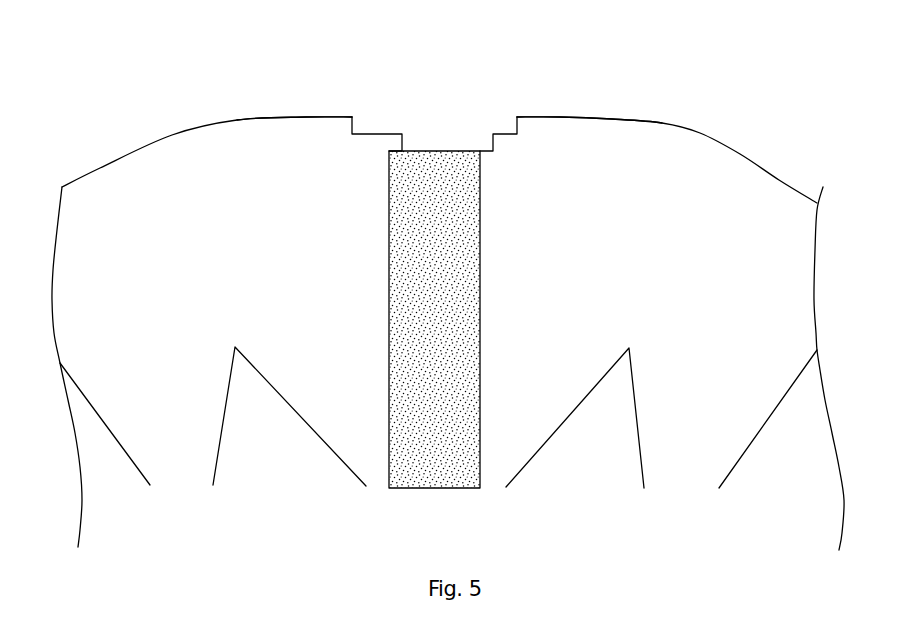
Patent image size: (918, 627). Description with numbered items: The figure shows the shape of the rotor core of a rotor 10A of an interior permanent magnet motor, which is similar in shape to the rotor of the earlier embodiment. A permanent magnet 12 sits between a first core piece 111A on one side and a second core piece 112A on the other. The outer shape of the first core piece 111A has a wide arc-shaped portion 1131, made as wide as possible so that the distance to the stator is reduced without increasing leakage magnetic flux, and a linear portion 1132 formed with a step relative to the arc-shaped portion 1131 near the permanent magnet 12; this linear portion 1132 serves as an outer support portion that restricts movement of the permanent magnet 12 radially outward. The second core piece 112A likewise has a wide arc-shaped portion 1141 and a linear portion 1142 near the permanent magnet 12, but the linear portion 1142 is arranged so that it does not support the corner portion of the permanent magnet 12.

The rotor 10A is at (461, 60).
The first core piece 111A is at (167, 175).
The second core piece 112A is at (735, 188).
The arc-shaped portion 1131 is at (260, 93).
The linear portion 1132 is at (396, 106).
The arc-shaped portion 1141 is at (643, 115).
The linear portion 1142 is at (500, 128).
The permanent magnet 12 is at (434, 178).